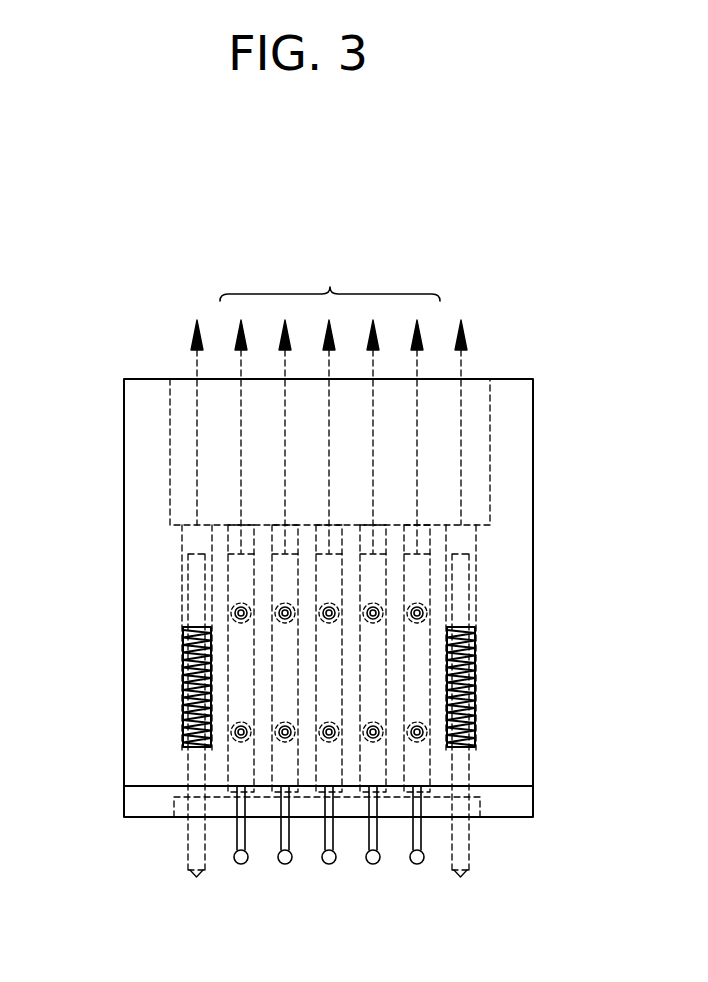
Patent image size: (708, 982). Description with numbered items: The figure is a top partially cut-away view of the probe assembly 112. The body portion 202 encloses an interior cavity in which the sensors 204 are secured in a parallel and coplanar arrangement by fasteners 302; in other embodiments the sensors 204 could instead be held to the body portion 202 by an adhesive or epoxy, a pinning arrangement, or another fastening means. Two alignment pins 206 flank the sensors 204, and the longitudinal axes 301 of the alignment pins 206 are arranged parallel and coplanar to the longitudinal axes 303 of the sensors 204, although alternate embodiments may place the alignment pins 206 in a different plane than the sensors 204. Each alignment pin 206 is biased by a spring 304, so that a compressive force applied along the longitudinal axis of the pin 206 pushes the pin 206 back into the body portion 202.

The probe assembly 112 is at (144, 243).
The body portion 202 is at (513, 395).
The sensors 204 is at (284, 550).
The alignment pins 206 is at (195, 878).
The longitudinal axes 301 is at (196, 370).
The fasteners 302 is at (424, 731).
The longitudinal axes 303 is at (330, 277).
The springs 304 is at (182, 678).